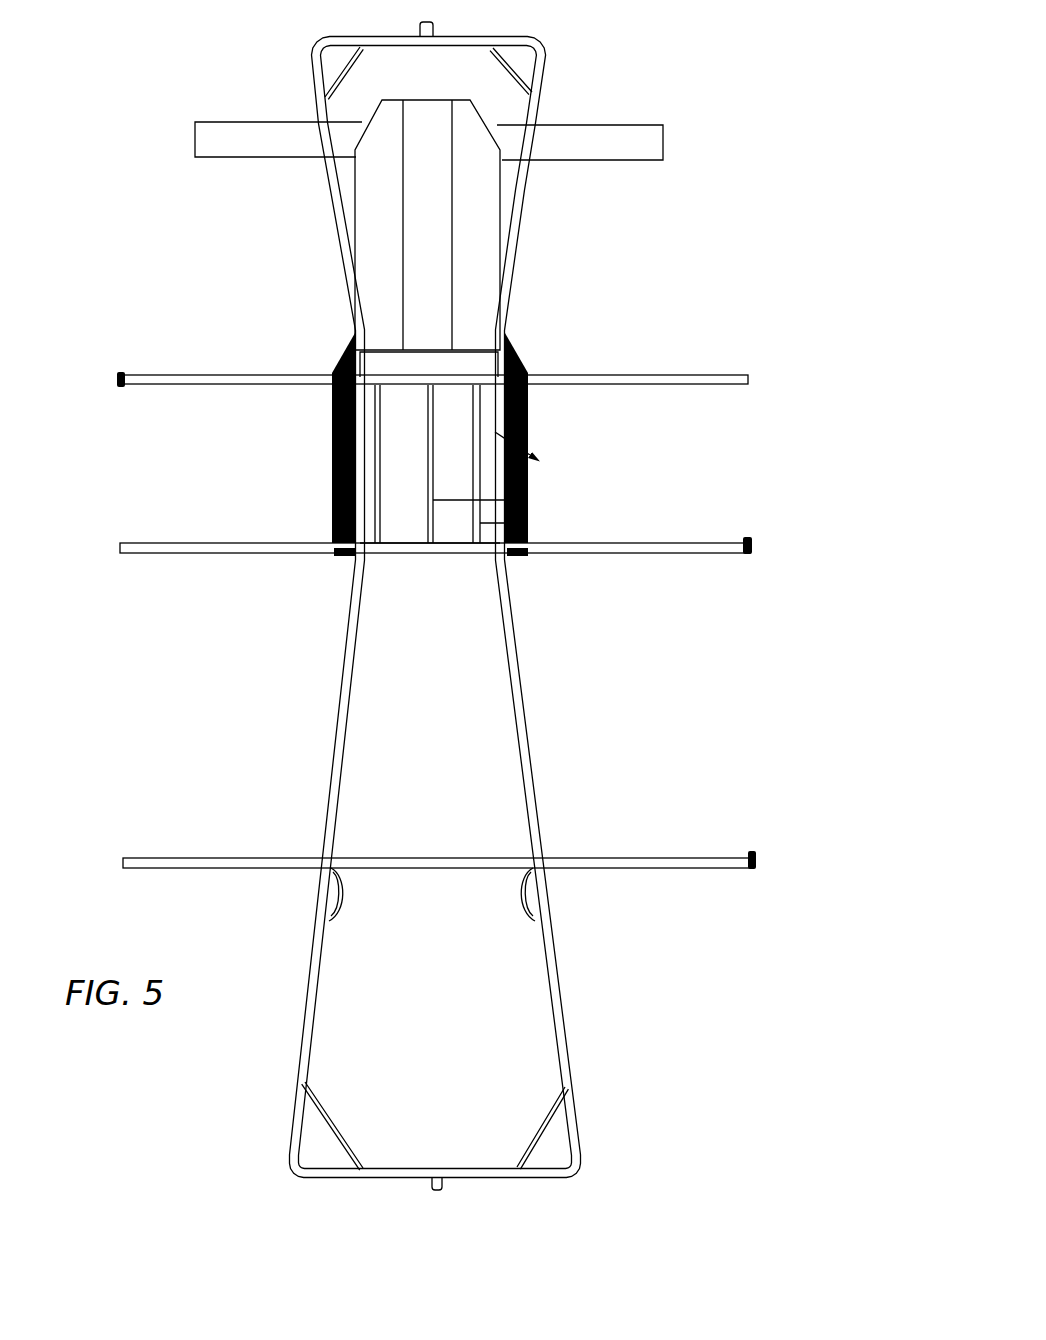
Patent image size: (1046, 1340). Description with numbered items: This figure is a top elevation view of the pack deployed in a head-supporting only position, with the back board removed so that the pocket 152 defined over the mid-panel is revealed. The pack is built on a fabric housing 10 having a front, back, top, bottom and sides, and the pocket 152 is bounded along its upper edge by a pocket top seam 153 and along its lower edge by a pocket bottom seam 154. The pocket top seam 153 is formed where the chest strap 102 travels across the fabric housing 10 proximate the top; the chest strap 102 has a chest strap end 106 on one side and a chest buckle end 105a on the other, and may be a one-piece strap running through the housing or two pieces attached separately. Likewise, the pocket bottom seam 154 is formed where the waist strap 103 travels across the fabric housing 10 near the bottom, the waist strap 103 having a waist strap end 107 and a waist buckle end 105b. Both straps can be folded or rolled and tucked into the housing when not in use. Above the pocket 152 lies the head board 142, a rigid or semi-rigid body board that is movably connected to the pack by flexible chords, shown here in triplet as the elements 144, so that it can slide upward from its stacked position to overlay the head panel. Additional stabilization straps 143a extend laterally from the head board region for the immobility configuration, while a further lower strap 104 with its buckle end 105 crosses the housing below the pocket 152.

The fabric housing 10 is at (330, 408).
The chest strap 102 is at (451, 331).
The waist strap 103 is at (420, 542).
The lower cross bar 104 is at (212, 860).
The end cap 105 is at (752, 851).
The chest buckle end 105a is at (116, 374).
The waist buckle end 105b is at (752, 540).
The chest strap end 106 is at (703, 375).
The waist strap end 107 is at (147, 551).
The head board 142 is at (372, 275).
The stabilization straps 143a is at (638, 130).
The inner support members 144 is at (480, 523).
The pocket 152 is at (483, 403).
The pocket top seam 153 is at (337, 365).
The pocket bottom seam 154 is at (470, 547).